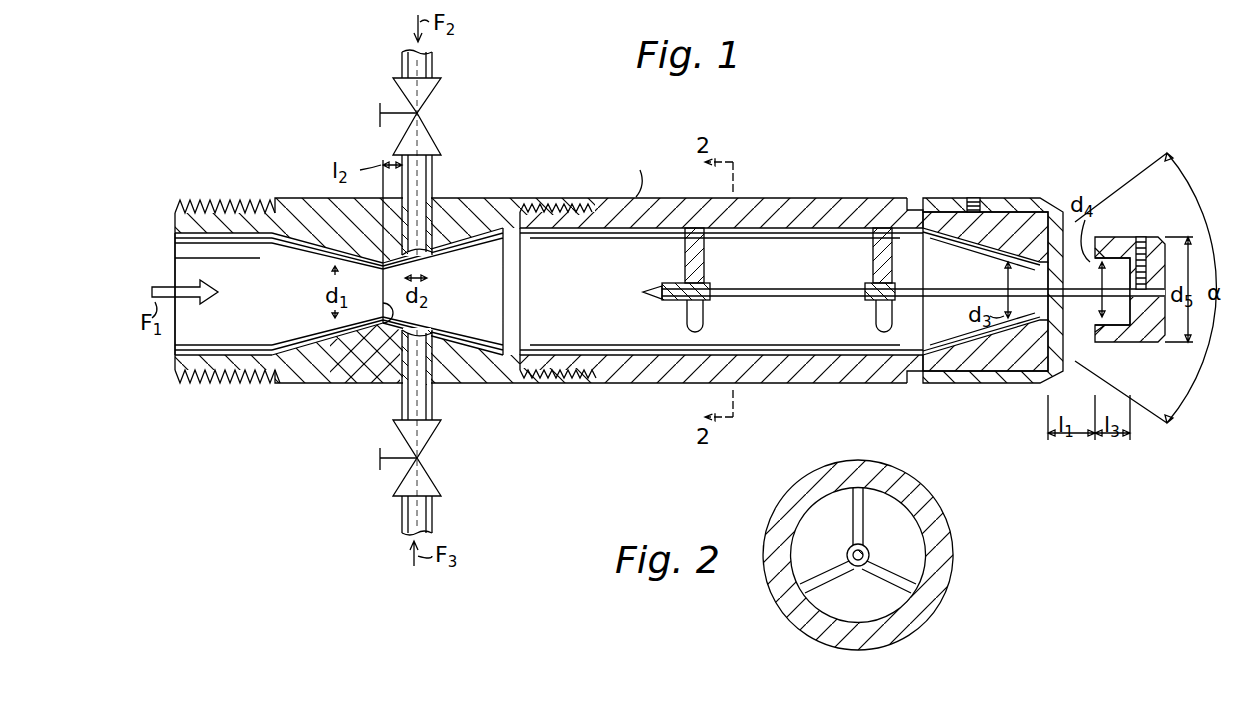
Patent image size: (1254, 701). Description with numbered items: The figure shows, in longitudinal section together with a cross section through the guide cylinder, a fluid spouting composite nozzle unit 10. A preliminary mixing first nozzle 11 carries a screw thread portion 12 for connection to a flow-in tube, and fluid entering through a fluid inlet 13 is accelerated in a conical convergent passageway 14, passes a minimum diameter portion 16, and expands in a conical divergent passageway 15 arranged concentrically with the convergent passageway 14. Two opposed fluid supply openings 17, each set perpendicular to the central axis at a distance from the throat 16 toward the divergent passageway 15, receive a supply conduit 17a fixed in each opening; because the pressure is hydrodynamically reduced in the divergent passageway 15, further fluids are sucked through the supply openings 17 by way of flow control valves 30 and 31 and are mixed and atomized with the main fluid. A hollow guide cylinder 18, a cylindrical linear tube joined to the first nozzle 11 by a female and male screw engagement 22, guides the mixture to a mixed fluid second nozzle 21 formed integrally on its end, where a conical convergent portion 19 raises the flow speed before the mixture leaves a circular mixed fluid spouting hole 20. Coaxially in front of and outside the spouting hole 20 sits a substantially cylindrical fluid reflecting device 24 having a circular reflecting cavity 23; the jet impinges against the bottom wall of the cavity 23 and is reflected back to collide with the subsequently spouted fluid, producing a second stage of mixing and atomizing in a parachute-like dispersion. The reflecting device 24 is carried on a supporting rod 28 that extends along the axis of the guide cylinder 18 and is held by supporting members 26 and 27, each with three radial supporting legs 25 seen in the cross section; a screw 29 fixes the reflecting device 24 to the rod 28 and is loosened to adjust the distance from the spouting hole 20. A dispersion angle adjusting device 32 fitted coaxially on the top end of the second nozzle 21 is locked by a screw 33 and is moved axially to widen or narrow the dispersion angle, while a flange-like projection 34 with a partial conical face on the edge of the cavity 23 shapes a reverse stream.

In FIG. 1, the nozzle apparatus 10 is at (636, 197).
In FIG. 1, the preliminary mixing first nozzle 11 is at (371, 384).
In FIG. 1, the screw thread portion 12 is at (240, 382).
In FIG. 1, the fluid inlet 13 is at (178, 257).
In FIG. 1, the conical convergent passageway 14 is at (240, 294).
In FIG. 1, the conical divergent passageway 15 is at (451, 291).
In FIG. 1, the minimum diameter portion 16 is at (383, 333).
In FIG. 1, the fluid supply opening 17 is at (440, 242).
In FIG. 1, the supply conduit 17a is at (436, 184).
In FIG. 1, the hollow guide cylinder 18 is at (808, 198).
In FIG. 2, the hollow guide cylinder 18 is at (950, 548).
In FIG. 1, the conical convergent portion 19 is at (981, 291).
In FIG. 1, the mixed fluid spouting hole 20 is at (1052, 322).
In FIG. 1, the mixed fluid second nozzle 21 is at (960, 370).
In FIG. 1, the female and male screw engagement 22 is at (562, 383).
In FIG. 1, the circular reflecting cavity 23 is at (1108, 335).
In FIG. 1, the fluid reflecting device 24 is at (1158, 330).
In FIG. 1, the supporting legs 25 is at (702, 312).
In FIG. 2, the supporting legs 25 is at (864, 530).
In FIG. 1, the supporting member 26 is at (657, 292).
In FIG. 2, the supporting member 26 is at (866, 556).
In FIG. 1, the supporting member 27 is at (868, 284).
In FIG. 1, the supporting rod 28 is at (740, 292).
In FIG. 2, the supporting rod 28 is at (850, 550).
In FIG. 1, the screw 29 is at (1142, 238).
In FIG. 1, the flow control valve 30 is at (379, 112).
In FIG. 1, the flow control valve 31 is at (379, 458).
In FIG. 1, the dispersion angle adjusting device 32 is at (1025, 198).
In FIG. 1, the screw 33 is at (973, 198).
In FIG. 1, the flange-like projection 34 is at (1104, 248).